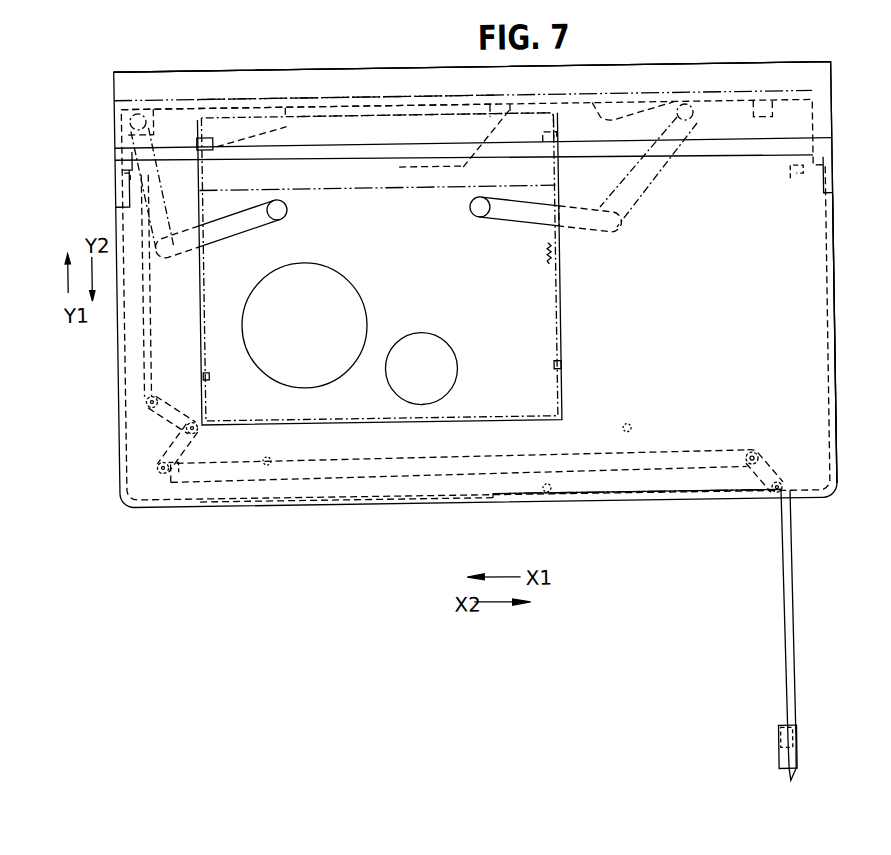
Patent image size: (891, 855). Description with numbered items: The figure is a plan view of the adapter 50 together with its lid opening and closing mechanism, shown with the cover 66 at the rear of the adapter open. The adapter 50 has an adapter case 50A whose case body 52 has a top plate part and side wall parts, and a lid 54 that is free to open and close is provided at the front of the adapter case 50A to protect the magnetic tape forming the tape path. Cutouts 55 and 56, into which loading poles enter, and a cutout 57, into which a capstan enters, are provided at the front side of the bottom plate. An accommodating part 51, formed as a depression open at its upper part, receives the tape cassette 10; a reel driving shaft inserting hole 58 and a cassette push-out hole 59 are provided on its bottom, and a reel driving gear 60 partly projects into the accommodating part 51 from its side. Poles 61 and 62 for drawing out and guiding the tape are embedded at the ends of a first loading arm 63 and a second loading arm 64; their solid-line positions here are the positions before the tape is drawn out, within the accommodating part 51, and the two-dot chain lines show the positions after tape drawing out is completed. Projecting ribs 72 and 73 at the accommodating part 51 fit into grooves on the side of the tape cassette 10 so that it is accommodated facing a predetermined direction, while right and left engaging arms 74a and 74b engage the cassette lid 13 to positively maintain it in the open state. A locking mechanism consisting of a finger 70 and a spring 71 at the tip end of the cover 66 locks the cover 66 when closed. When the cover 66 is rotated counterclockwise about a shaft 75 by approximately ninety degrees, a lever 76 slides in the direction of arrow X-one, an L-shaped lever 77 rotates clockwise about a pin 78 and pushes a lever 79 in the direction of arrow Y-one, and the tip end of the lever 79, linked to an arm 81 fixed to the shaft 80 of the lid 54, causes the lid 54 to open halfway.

The tape cassette 10 is at (540, 319).
The lid 13 is at (316, 108).
The adapter 50 is at (758, 54).
The adapter case 50A is at (835, 308).
The accommodating part 51 is at (345, 411).
The case body 52 is at (817, 365).
The lid 54 is at (350, 81).
The cutout 55 is at (185, 106).
The cutout 56 is at (458, 118).
The cutout 57 is at (619, 94).
The reel driving shaft inserting hole 58 is at (359, 299).
The cassette push-out hole 59 is at (446, 345).
The reel driving gear 60 is at (548, 263).
The pole 61 is at (688, 108).
The pole 62 is at (132, 117).
The first loading arm 63 is at (511, 221).
The second loading arm 64 is at (238, 226).
The cover 66 is at (788, 570).
The finger 70 is at (778, 783).
The spring 71 is at (793, 740).
The projecting rib 72 is at (554, 366).
The projecting rib 73 is at (207, 369).
The right engaging arm 74a is at (549, 136).
The left engaging arm 74b is at (187, 151).
The shaft 75 is at (770, 500).
The lever 76 is at (457, 473).
The L-shaped lever 77 is at (163, 418).
The pin 78 is at (190, 409).
The lever 79 is at (124, 346).
The shaft 80 is at (115, 177).
The arm 81 is at (117, 155).